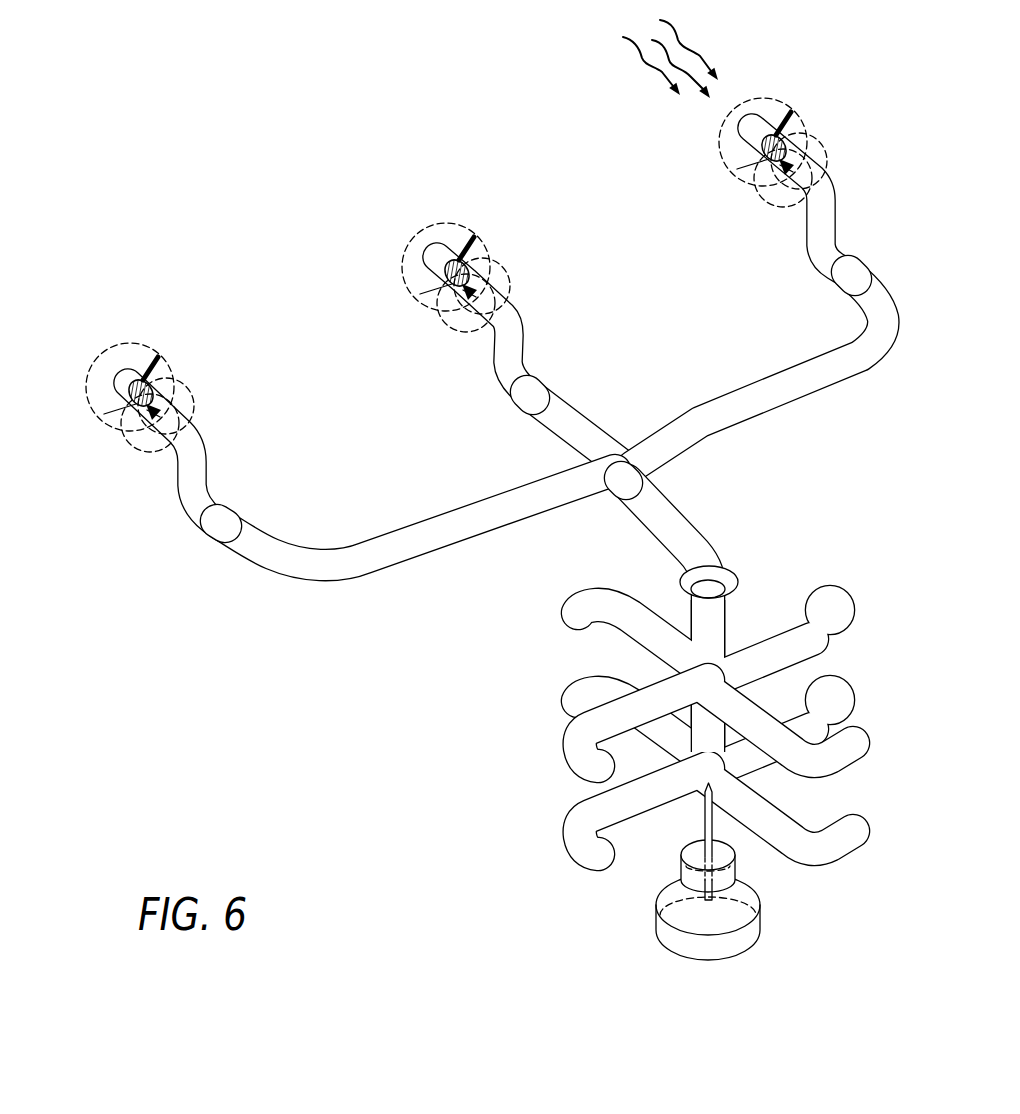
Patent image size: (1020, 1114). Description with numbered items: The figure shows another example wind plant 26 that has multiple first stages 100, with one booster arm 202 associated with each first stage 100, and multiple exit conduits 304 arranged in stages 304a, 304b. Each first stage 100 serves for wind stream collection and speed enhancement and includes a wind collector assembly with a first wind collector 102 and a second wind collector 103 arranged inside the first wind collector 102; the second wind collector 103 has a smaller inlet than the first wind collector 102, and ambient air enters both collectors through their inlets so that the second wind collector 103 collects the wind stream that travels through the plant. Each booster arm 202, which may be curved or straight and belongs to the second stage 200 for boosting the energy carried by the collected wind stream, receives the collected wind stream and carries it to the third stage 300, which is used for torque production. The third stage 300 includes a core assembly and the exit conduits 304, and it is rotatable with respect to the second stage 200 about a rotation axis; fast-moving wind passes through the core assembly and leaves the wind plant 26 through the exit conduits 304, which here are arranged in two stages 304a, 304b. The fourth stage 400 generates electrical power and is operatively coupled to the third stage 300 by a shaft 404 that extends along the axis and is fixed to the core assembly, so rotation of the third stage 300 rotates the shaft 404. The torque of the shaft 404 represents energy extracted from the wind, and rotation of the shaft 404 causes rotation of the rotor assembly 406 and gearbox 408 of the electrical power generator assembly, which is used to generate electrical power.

The wind plant 26 is at (305, 56).
The first stage 100 is at (463, 275).
The first wind collector 102 is at (93, 411).
The second wind collector 103 is at (117, 368).
The second stage 200 is at (553, 428).
The booster arm 202 is at (426, 513).
The third stage 300 is at (625, 703).
The exit conduit 304 is at (690, 703).
The first stage of exit conduits 304a is at (523, 590).
The second stage of exit conduits 304b is at (546, 709).
The fourth stage 400 is at (676, 885).
The shaft 404 is at (703, 820).
The rotor assembly 406 is at (762, 915).
The gearbox 408 is at (740, 863).